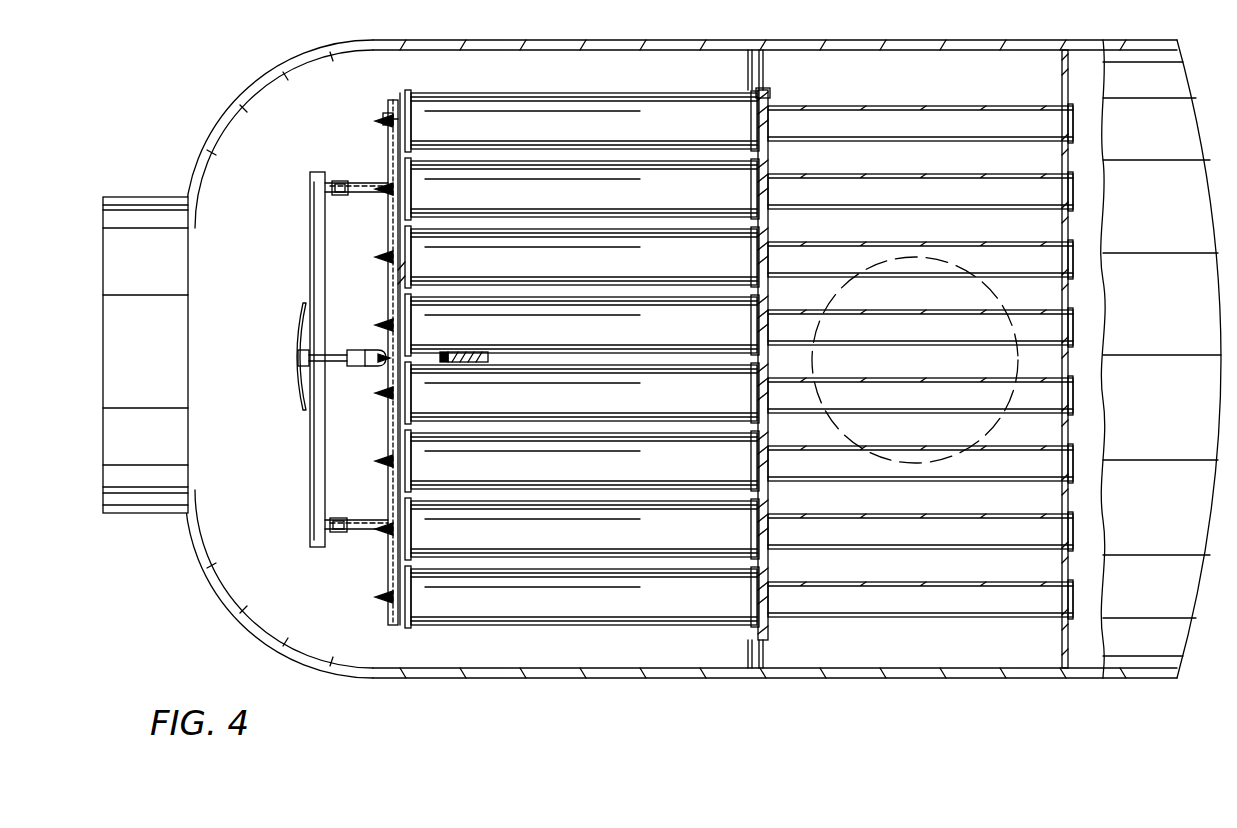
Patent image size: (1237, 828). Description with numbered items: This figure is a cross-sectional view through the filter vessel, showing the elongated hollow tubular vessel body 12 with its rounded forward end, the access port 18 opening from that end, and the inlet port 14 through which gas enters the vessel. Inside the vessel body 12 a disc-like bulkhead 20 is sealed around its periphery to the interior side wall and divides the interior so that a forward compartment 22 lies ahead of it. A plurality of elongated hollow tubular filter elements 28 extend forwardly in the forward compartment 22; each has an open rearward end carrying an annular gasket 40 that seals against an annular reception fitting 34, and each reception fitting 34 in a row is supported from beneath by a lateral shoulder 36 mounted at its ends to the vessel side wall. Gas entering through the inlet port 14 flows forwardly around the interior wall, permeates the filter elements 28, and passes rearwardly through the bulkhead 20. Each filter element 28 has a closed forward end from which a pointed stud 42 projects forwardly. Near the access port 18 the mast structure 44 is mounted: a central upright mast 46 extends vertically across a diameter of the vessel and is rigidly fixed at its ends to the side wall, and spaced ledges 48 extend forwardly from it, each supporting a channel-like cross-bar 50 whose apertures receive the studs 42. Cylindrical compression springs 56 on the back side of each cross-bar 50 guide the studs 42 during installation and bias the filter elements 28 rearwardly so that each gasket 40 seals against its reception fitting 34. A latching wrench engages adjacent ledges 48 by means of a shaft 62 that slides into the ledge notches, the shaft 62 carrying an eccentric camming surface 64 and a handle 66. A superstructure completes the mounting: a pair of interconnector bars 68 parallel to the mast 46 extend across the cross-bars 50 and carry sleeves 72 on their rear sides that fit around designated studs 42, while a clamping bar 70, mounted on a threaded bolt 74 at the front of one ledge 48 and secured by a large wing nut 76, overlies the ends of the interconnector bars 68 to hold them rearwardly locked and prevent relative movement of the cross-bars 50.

The vessel body 12 is at (425, 40).
The inlet port 14 is at (1018, 362).
The access port 18 is at (140, 197).
The bulkhead 20 is at (1066, 52).
The forward compartment 22 is at (565, 50).
The filter elements 28 is at (507, 93).
The reception fittings 34 is at (770, 98).
The shoulders 36 is at (748, 50).
The annular gasket 40 is at (766, 88).
The pointed stud 42 is at (383, 118).
The mast structure 44 is at (376, 344).
The mast 46 is at (486, 352).
The ledges 48 is at (355, 366).
The cross-bar 50 is at (393, 113).
The compression springs 56 is at (400, 100).
The shaft 62 is at (370, 366).
The camming surface 64 is at (382, 364).
The handle 66 is at (405, 272).
The interconnector bars 68 is at (340, 195).
The clamping bar 70 is at (310, 242).
The sleeves 72 is at (360, 183).
The threaded bolt 74 is at (298, 358).
The wing nut 76 is at (300, 332).